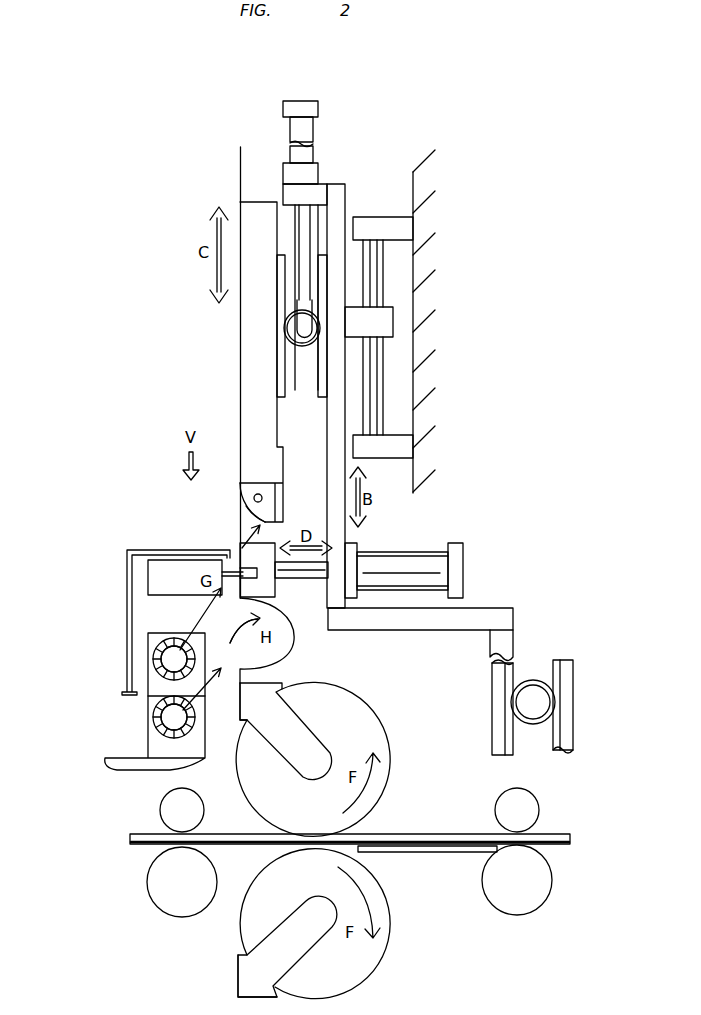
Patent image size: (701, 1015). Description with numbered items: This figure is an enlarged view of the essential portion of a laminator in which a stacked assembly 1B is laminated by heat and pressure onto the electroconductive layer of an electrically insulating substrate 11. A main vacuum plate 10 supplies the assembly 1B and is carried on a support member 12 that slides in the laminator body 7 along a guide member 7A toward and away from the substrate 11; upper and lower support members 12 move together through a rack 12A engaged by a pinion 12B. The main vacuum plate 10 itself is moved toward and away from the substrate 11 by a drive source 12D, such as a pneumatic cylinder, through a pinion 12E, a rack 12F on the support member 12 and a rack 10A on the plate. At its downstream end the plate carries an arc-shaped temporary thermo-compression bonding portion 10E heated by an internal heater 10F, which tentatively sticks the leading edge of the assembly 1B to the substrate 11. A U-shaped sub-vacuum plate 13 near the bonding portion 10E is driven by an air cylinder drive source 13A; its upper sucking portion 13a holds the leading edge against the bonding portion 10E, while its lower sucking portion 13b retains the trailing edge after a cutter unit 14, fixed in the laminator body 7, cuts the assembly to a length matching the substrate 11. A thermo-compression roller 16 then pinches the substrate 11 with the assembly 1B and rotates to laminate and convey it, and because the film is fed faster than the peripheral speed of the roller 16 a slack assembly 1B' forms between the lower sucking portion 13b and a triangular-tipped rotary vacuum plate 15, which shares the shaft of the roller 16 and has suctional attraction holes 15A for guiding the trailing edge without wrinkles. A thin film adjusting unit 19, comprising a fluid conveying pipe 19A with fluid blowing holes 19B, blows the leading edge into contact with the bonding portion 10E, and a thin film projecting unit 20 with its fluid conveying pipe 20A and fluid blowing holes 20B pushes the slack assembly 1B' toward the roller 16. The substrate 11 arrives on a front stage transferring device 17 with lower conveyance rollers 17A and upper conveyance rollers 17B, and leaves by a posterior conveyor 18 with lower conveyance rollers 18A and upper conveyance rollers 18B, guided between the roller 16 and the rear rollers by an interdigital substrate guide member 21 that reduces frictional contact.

The stacked assembly 1B is at (214, 372).
The slack assembly 1B' is at (293, 640).
The laminator body 7 is at (422, 340).
The guide member 7A is at (413, 264).
The main vacuum plate 10 is at (240, 350).
The rack 10A is at (279, 378).
The temporary thermo-compression bonding portion 10E is at (246, 512).
The heater 10F is at (239, 489).
The insulating substrate 11 is at (130, 838).
The support member 12 is at (340, 203).
The rack 12A is at (498, 690).
The pinion 12B is at (535, 682).
The drive source 12D is at (312, 130).
The pinion 12E is at (303, 347).
The rack 12F is at (284, 318).
The sub-vacuum plate 13 is at (268, 580).
The drive source 13A is at (415, 563).
The upper sucking portion 13a is at (239, 543).
The lower sucking portion 13b is at (240, 597).
The cutter unit 14 is at (160, 572).
The rotary vacuum plate 15 is at (262, 688).
The suctional attraction holes 15A is at (240, 703).
The thermo-compression roller 16 is at (360, 723).
The front stage transferring device 17 is at (135, 874).
The lower conveyance rollers 17A is at (158, 898).
The upper conveyance rollers 17B is at (160, 810).
The posterior conveyor 18 is at (569, 875).
The lower conveyance rollers 18A is at (538, 903).
The upper conveyance rollers 18B is at (534, 811).
The thin film adjusting unit 19 is at (155, 648).
The fluid conveying pipe 19A is at (155, 667).
The fluid blowing holes 19B is at (177, 637).
The thin film projecting unit 20 is at (158, 715).
The fluid conveying pipe 20A is at (177, 738).
The fluid blowing holes 20B is at (157, 692).
The substrate guide member 21 is at (420, 848).